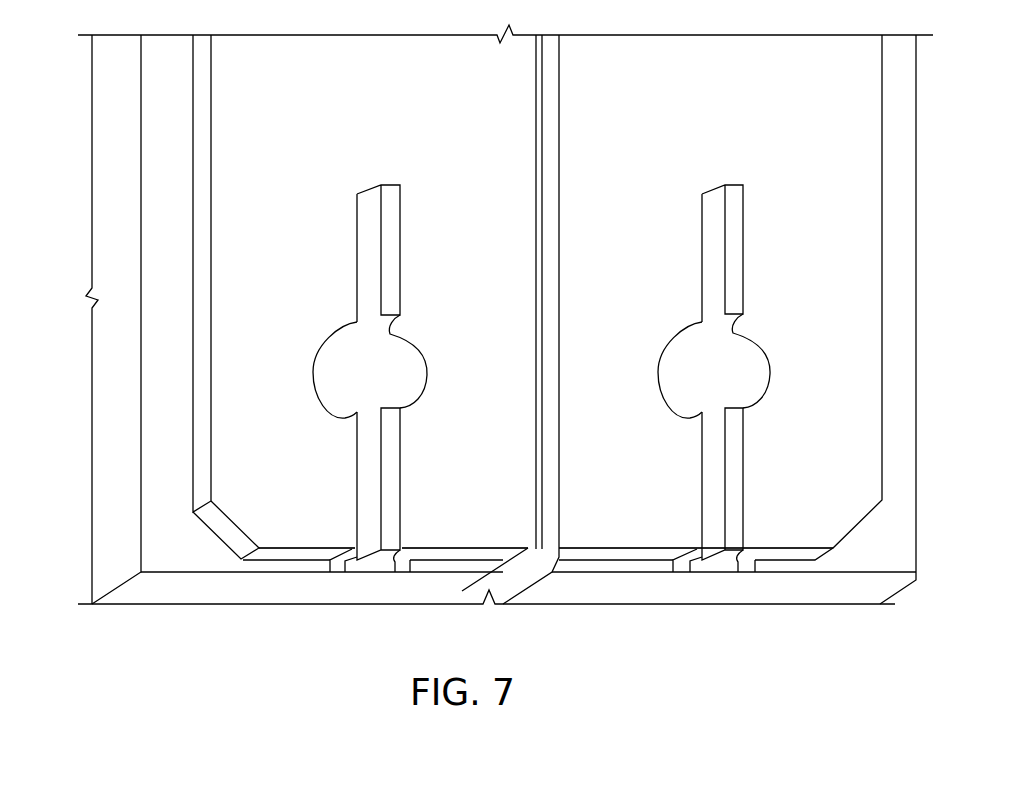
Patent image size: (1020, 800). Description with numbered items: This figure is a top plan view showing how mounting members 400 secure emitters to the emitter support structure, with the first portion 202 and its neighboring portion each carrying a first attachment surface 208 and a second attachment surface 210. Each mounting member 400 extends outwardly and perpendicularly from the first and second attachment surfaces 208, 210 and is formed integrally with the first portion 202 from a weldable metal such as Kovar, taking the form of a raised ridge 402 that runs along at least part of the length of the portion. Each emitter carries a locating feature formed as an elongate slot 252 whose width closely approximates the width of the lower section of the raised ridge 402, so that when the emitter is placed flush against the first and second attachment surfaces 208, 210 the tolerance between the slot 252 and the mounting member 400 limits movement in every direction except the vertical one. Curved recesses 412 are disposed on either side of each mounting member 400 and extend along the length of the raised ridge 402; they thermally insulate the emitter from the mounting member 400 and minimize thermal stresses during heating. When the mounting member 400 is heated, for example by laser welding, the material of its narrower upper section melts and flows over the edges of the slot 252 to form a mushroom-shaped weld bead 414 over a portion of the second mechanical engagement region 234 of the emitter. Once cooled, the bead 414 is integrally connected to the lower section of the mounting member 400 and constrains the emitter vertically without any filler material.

The first portion 202 is at (158, 529).
The first attachment surface 208 is at (207, 572).
The second attachment surface 210 is at (856, 565).
The second mechanical engagement region 234 is at (230, 470).
The elongate slot 252 is at (357, 250).
The mounting member 400 is at (550, 383).
The raised ridge 402 is at (426, 222).
The recess 412 is at (396, 584).
The weld bead 414 is at (345, 353).